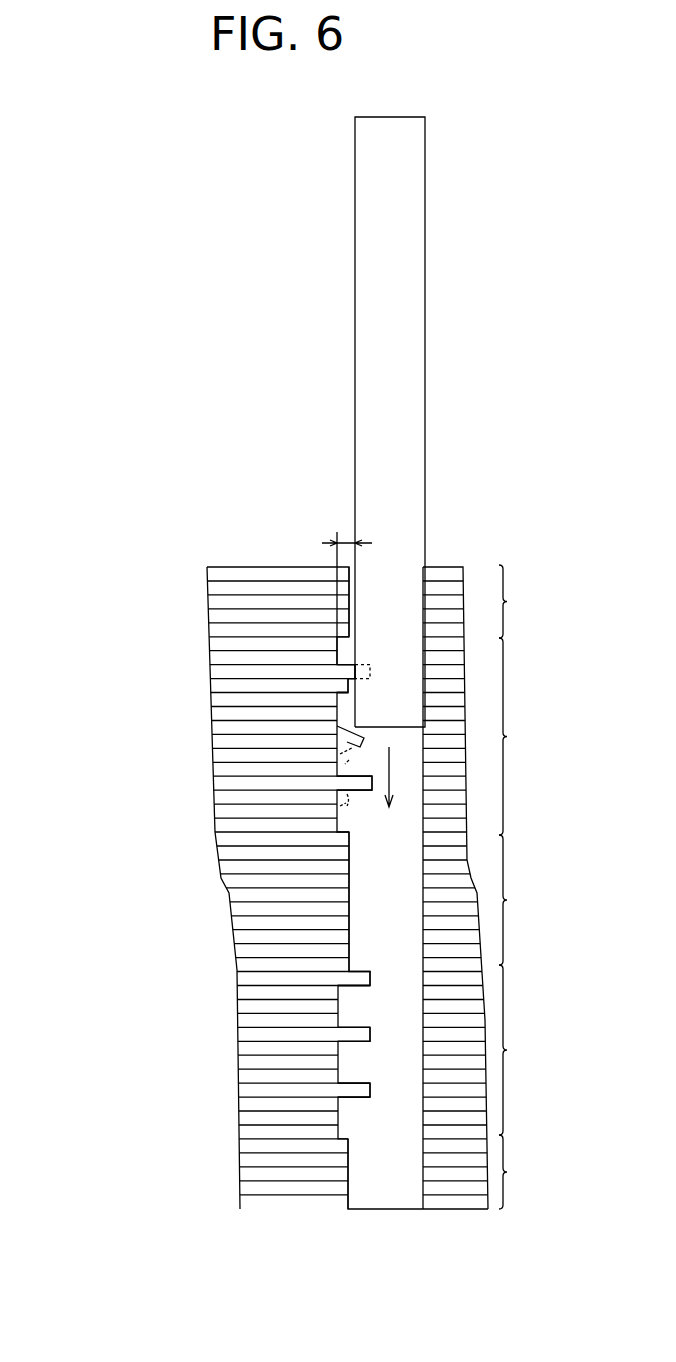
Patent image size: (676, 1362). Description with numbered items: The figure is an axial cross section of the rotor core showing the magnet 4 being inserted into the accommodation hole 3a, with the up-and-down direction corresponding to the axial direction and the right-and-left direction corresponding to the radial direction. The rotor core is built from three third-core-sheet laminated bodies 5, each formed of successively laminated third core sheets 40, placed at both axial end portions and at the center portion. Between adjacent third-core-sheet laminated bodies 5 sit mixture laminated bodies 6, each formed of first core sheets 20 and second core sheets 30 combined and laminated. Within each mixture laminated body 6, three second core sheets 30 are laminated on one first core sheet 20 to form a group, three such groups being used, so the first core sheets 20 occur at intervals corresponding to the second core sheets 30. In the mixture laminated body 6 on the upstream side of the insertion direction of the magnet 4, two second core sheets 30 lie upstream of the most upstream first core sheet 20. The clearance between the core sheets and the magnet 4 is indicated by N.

The magnet 4 is at (427, 373).
The accommodation hole 3a is at (383, 910).
The third core sheet 40 is at (210, 573).
The first core sheet 20 is at (210, 675).
The second core sheet 30 is at (210, 647).
The clearance N is at (347, 586).
The third-core-sheet laminated body 5 is at (515, 887).
The mixture laminated body 6 is at (515, 886).